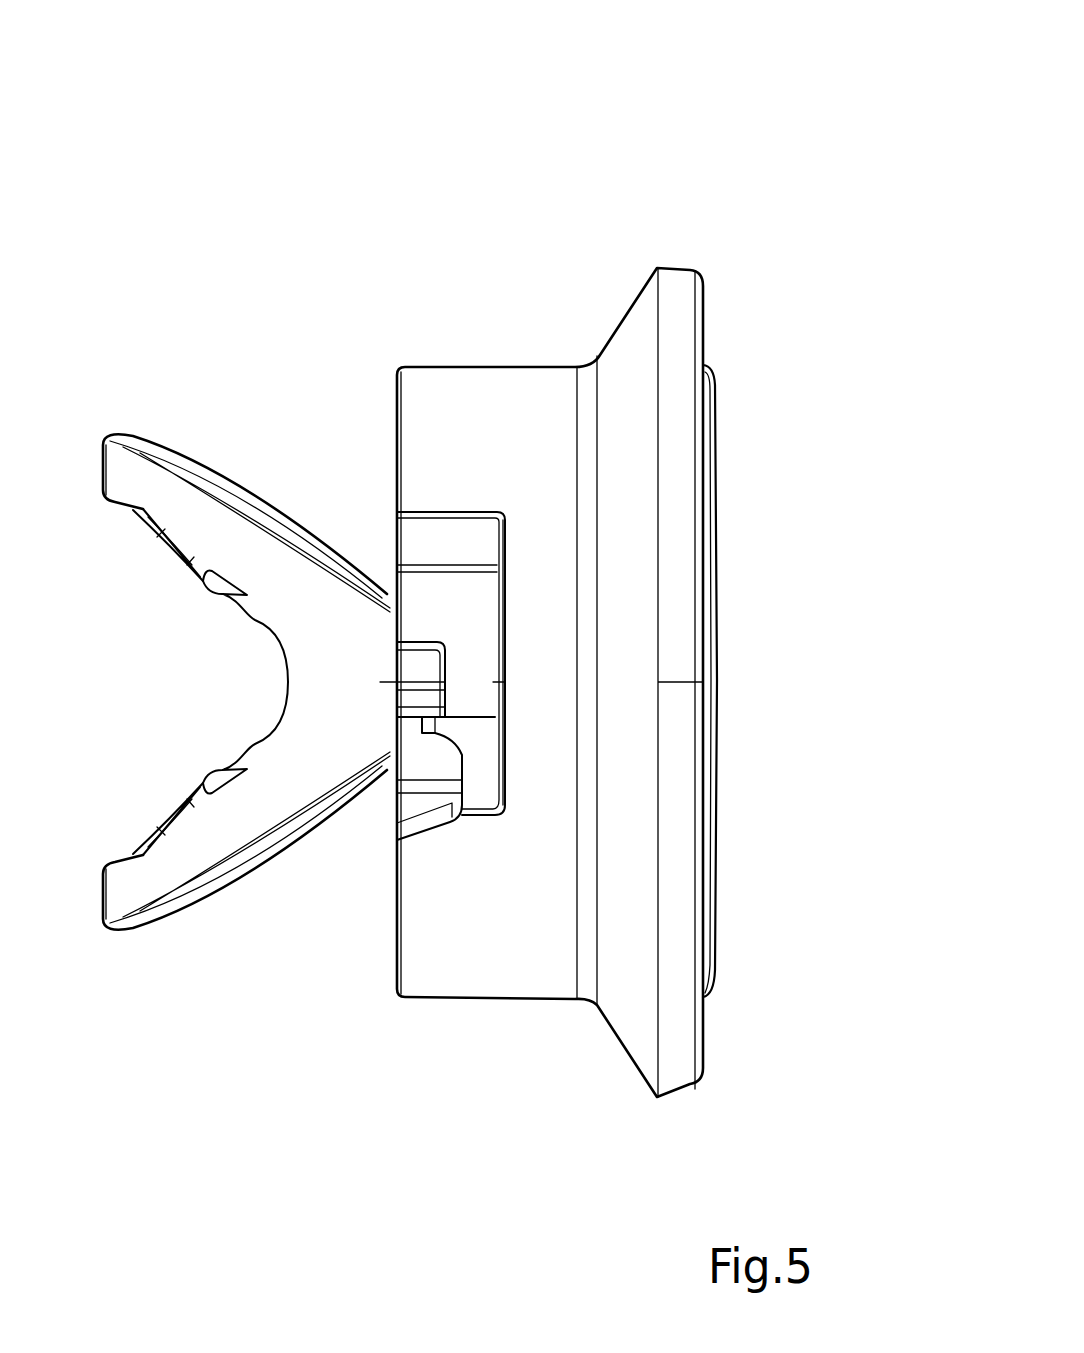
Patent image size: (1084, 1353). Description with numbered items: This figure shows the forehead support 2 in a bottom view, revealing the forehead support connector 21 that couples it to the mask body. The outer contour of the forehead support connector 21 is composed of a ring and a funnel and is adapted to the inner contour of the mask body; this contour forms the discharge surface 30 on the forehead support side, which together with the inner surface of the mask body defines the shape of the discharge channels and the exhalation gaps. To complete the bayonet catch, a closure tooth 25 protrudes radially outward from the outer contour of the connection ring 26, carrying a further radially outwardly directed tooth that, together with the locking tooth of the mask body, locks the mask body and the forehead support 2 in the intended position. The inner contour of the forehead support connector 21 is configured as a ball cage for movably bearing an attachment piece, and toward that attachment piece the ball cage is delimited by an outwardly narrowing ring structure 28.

The forehead support 2 is at (713, 248).
The forehead support connector 21 is at (533, 365).
The closure tooth 25 is at (417, 673).
The connection ring 26 is at (494, 410).
The ring structure 28 is at (710, 397).
The discharge surface 30 is at (635, 992).